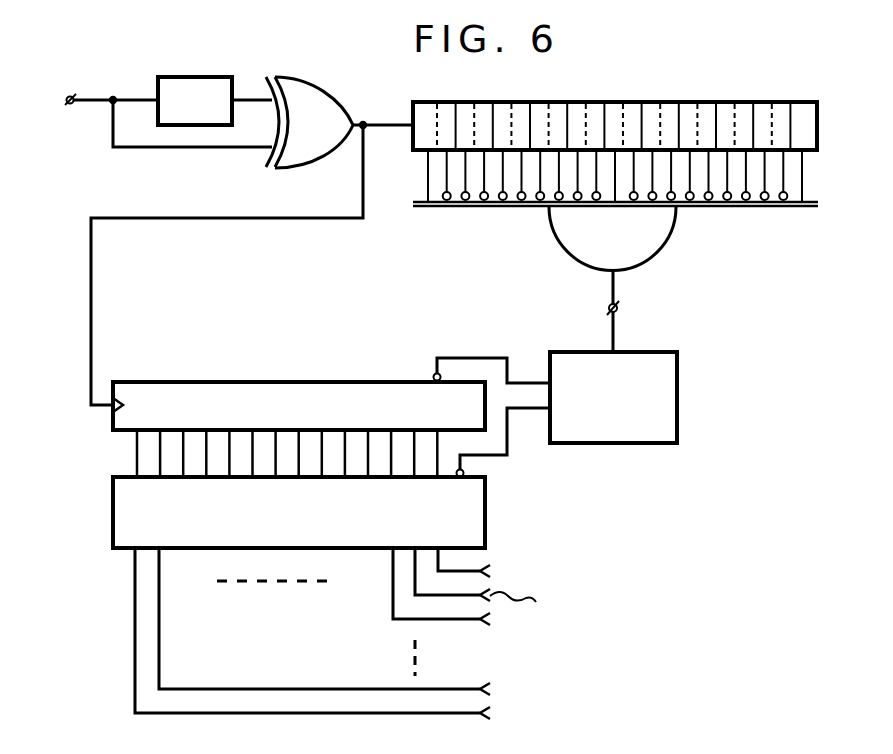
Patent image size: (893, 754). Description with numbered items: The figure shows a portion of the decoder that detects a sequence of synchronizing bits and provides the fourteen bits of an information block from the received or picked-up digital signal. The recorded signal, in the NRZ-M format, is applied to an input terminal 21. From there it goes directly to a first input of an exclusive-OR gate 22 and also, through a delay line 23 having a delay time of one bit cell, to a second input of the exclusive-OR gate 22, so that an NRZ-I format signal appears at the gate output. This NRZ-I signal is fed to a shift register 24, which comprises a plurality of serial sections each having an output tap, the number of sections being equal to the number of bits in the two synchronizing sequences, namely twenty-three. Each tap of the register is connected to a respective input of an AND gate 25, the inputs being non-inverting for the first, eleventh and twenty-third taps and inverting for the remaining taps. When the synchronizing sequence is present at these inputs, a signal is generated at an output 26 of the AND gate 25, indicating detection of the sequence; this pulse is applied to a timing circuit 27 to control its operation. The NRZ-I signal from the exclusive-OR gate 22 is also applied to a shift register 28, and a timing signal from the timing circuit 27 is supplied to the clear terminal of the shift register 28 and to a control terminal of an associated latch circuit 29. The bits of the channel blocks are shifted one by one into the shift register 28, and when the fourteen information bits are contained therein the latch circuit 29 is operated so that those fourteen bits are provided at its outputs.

The input terminal 21 is at (62, 104).
The exclusive-OR gate 22 is at (342, 76).
The delay line 23 is at (165, 77).
The shift register 24 is at (556, 102).
The AND gate 25 is at (652, 252).
The output terminal 26 is at (618, 306).
The timing circuit 27 is at (677, 400).
The shift register 28 is at (197, 382).
The latch circuit 29 is at (487, 512).